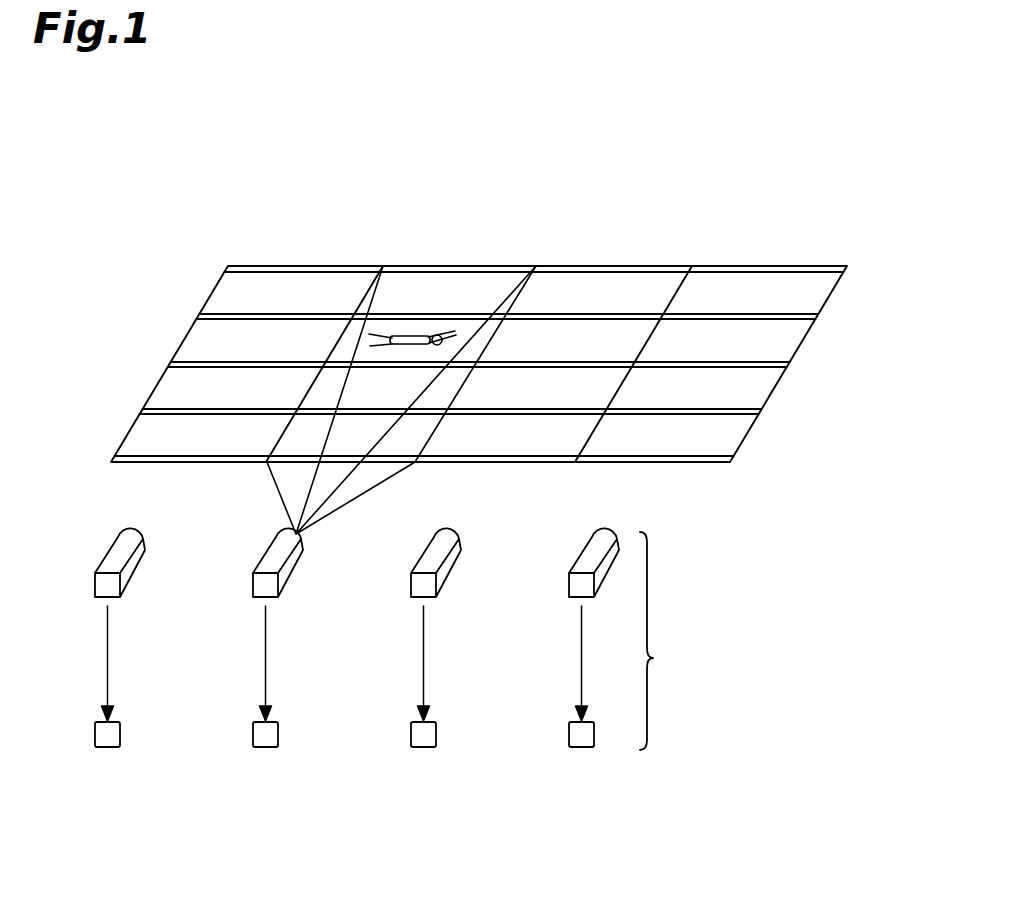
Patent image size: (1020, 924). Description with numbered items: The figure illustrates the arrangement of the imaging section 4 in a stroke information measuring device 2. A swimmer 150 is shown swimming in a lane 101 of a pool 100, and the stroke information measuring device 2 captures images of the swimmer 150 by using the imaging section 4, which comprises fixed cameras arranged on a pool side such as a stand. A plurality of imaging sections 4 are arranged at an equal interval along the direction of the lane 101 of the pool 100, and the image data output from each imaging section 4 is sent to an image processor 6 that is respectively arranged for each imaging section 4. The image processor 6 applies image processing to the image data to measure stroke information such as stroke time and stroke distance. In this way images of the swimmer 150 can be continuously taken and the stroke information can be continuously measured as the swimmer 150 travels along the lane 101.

The pool 100 is at (790, 268).
The lane 101 is at (780, 338).
The swimmer 150 is at (410, 333).
The imaging section 4 is at (130, 577).
The image processor 6 is at (112, 747).
The stroke information measuring device 2 is at (658, 641).